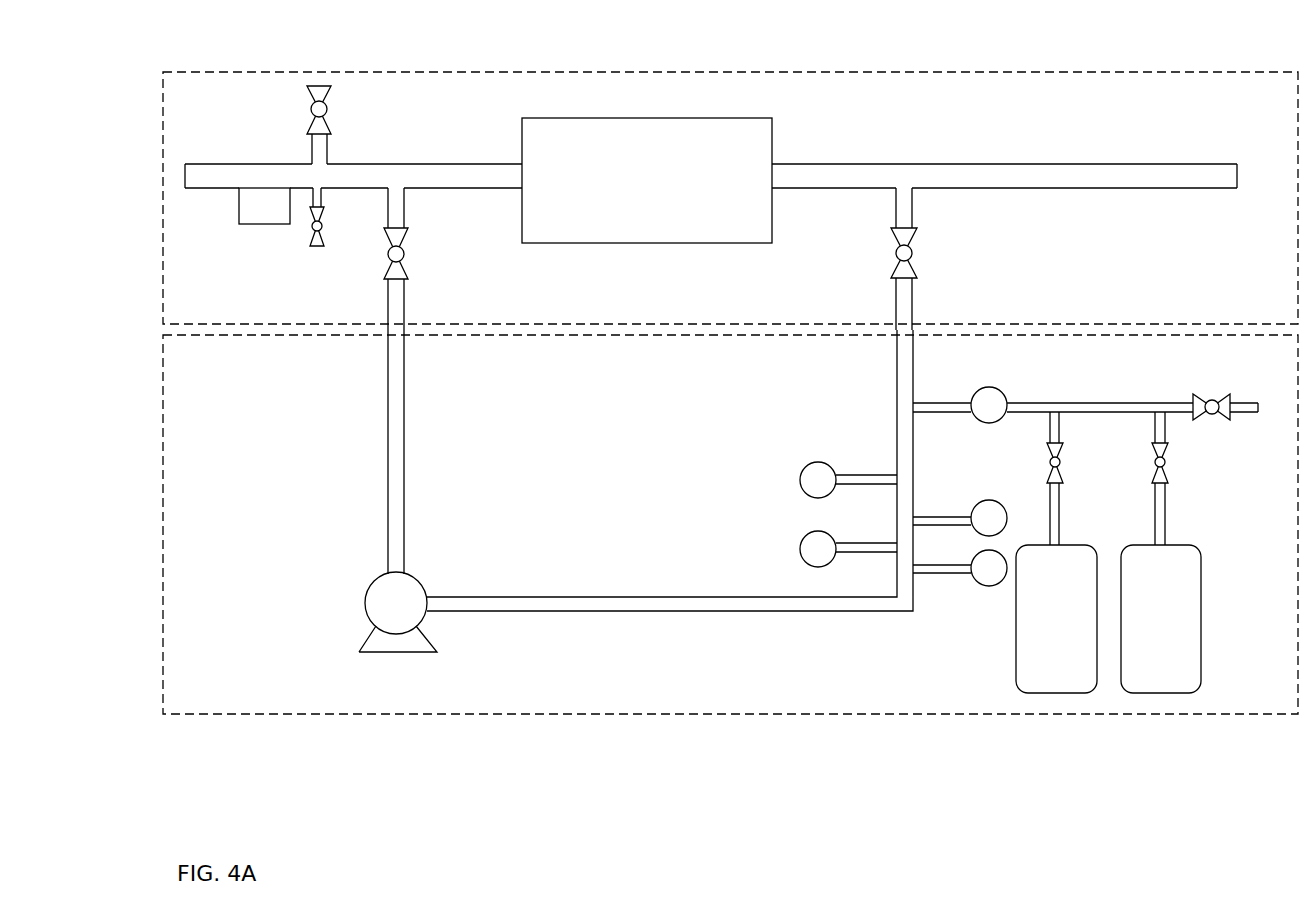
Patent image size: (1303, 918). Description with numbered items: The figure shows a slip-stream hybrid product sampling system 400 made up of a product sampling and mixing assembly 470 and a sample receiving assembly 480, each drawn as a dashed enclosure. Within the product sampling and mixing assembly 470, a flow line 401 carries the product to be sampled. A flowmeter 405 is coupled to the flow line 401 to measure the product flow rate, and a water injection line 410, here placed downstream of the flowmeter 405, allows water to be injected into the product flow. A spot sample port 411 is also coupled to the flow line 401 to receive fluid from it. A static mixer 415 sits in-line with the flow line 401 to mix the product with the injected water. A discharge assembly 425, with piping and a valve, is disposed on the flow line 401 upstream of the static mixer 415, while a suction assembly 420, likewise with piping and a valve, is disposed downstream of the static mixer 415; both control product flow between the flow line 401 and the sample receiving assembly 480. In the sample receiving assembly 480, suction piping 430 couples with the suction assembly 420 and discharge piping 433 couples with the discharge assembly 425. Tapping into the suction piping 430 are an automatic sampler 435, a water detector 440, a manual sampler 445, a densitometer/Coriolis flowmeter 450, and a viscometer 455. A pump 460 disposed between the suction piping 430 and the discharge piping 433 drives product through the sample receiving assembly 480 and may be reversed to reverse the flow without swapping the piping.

The slip-stream hybrid product sampling system 400 is at (334, 62).
The flow line 401 is at (422, 164).
The flowmeter 405 is at (270, 224).
The water injection line 410 is at (312, 150).
The spot sample port 411 is at (322, 226).
The static mixer 415 is at (772, 130).
The suction assembly 420 is at (897, 305).
The discharge assembly 425 is at (388, 300).
The suction piping 430 is at (897, 380).
The discharge piping 433 is at (388, 412).
The automatic sampler 435 is at (982, 388).
The water detector 440 is at (983, 501).
The manual sampler 445 is at (802, 468).
The densitometer/Coriolis flowmeter 450 is at (802, 535).
The viscometer 455 is at (990, 587).
The pump 460 is at (368, 590).
The product sampling and mixing assembly 470 is at (1043, 71).
The sample receiving assembly 480 is at (1160, 714).